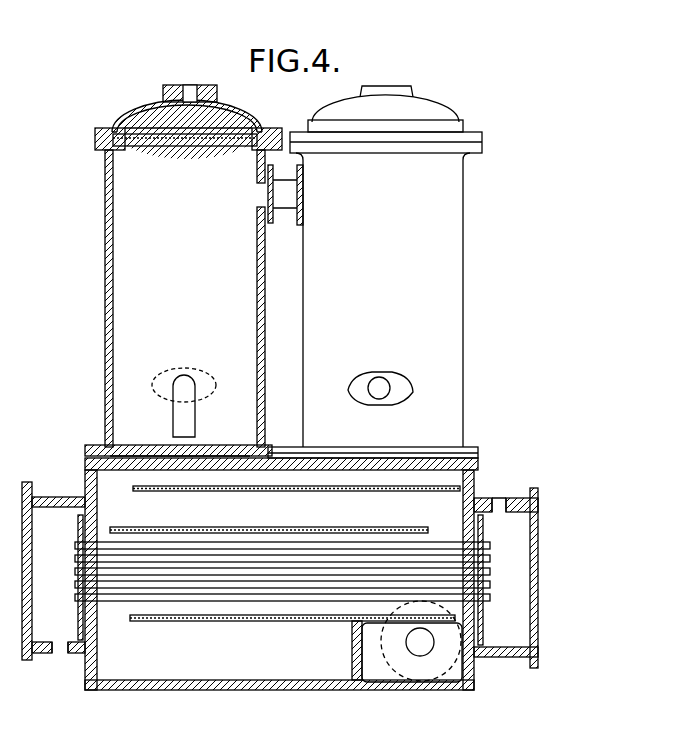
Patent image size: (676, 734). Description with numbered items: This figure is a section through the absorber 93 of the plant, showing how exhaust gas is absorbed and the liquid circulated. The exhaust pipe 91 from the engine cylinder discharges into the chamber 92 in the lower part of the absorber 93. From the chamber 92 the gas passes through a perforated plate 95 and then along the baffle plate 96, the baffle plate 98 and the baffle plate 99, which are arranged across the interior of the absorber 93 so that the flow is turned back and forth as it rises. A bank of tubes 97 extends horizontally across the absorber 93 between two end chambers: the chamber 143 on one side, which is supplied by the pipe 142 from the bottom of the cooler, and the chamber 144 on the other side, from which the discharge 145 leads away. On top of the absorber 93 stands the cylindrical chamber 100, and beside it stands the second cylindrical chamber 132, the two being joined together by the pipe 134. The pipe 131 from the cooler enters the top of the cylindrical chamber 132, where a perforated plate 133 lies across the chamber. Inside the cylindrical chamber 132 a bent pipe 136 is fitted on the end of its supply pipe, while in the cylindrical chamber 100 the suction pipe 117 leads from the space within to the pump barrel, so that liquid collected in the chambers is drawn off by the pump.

The pipe 131 is at (193, 90).
The perforated plate 133 is at (170, 138).
The pipe 134 is at (290, 215).
The cylindrical chamber 132 is at (107, 287).
The cylindrical chamber 100 is at (375, 272).
The bent pipe 136 is at (195, 422).
The suction pipe 117 is at (379, 399).
The absorber 93 is at (88, 480).
The baffle plate 99 is at (313, 489).
The baffle plate 98 is at (335, 526).
The discharge 145 is at (497, 499).
The chamber 143 is at (53, 571).
The chamber 144 is at (506, 578).
The tubes 97 is at (140, 600).
The pipe 142 is at (62, 655).
The baffle plate 96 is at (264, 643).
The perforated plate 95 is at (355, 660).
The chamber 92 is at (412, 652).
The exhaust pipe 91 is at (420, 656).